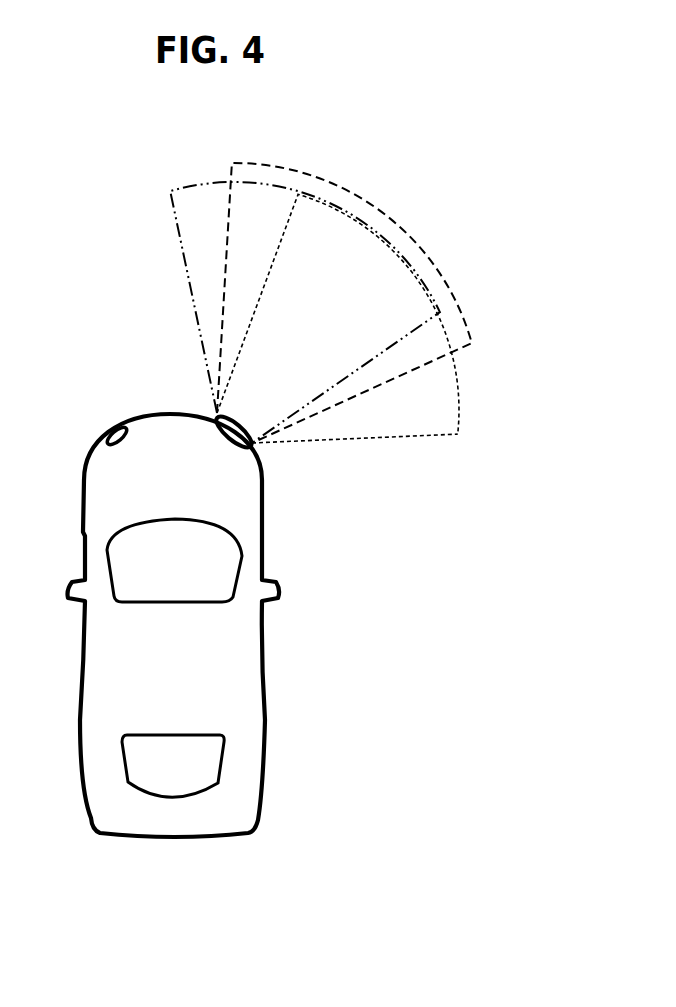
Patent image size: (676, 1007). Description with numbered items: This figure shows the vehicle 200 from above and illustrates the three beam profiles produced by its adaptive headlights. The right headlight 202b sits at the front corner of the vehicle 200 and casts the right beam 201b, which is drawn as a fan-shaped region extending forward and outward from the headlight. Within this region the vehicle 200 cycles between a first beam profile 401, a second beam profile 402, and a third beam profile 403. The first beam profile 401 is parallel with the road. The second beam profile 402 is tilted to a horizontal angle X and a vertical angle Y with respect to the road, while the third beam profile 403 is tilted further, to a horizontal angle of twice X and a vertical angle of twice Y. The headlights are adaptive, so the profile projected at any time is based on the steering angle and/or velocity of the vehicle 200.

The vehicle 200 is at (290, 651).
The right beam 201b is at (457, 259).
The right headlight 202b is at (222, 441).
The first beam profile 401 is at (188, 295).
The second beam profile 402 is at (305, 170).
The third beam profile 403 is at (410, 443).